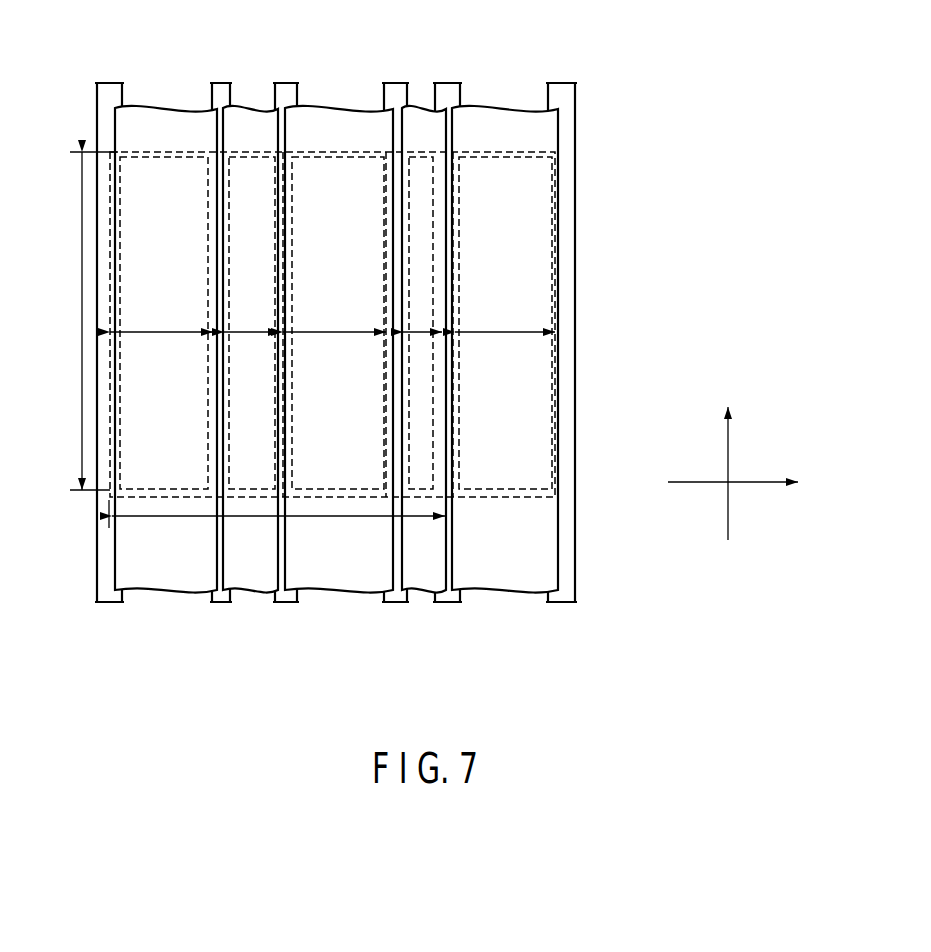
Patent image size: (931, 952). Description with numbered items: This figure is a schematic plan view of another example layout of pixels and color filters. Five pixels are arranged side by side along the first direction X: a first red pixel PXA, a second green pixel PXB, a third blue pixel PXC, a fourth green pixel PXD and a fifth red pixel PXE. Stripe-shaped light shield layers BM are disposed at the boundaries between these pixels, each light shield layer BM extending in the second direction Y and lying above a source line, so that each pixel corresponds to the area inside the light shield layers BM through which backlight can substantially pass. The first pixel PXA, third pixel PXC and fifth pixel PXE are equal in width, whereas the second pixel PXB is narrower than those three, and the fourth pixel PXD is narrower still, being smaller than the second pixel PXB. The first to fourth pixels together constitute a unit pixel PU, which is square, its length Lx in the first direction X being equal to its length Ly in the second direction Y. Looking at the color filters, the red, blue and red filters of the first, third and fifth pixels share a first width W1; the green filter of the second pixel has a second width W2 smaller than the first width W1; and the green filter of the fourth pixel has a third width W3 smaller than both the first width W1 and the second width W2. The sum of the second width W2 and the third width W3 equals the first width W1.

The light shield layer BM is at (109, 96).
The unit pixel PU is at (452, 153).
The first pixel (red pixel) PXA is at (163, 152).
The second pixel (green pixel) PXB is at (253, 152).
The third pixel (blue pixel) PXC is at (337, 152).
The fourth pixel (green pixel) PXD is at (421, 152).
The fifth pixel (red pixel) PXE is at (523, 157).
The first width W1 is at (167, 330).
The second width W2 is at (253, 330).
The third width W3 is at (425, 330).
The length in the second direction Ly is at (80, 315).
The length in the first direction Lx is at (311, 520).
The first direction X is at (743, 481).
The second direction Y is at (728, 455).